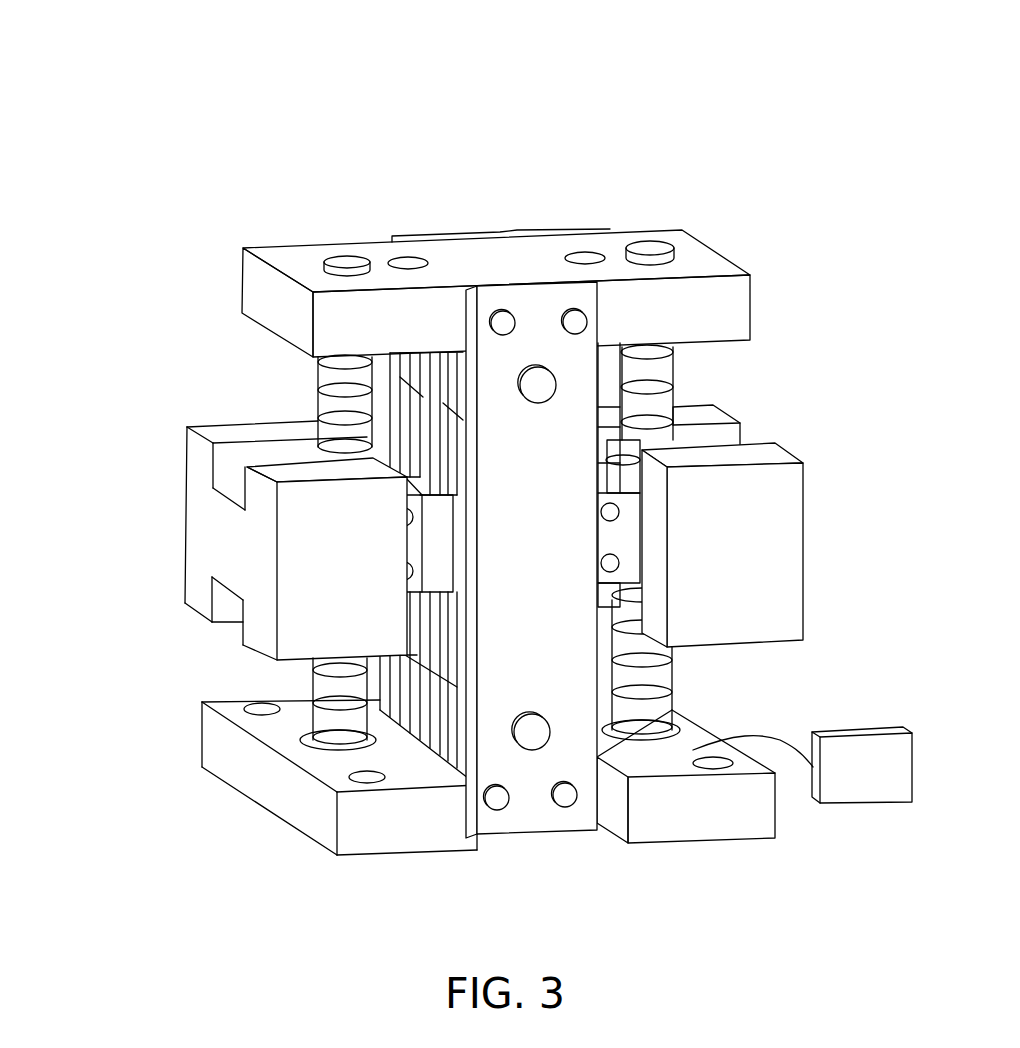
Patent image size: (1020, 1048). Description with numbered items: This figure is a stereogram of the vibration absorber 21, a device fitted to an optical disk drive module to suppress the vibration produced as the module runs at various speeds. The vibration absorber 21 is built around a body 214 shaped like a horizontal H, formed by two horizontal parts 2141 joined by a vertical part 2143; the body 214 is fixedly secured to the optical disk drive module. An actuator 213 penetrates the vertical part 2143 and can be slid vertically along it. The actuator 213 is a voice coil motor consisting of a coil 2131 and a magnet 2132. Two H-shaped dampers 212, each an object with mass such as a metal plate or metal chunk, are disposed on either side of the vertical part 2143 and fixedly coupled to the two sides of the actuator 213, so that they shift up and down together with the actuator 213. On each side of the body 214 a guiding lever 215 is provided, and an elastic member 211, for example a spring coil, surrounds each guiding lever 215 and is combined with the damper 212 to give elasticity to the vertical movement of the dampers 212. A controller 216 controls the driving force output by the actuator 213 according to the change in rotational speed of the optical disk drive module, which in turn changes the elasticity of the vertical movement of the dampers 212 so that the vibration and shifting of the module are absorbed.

The vibration absorber 21 is at (687, 99).
The elastic member 211 is at (672, 412).
The damper 212 is at (780, 531).
The actuator 213 is at (245, 560).
The coil 2131 is at (433, 560).
The magnet 2132 is at (450, 458).
The body 214 is at (519, 525).
The horizontal part 2141 is at (708, 297).
The vertical part 2143 is at (570, 757).
The guiding lever 215 is at (658, 368).
The controller 216 is at (873, 738).